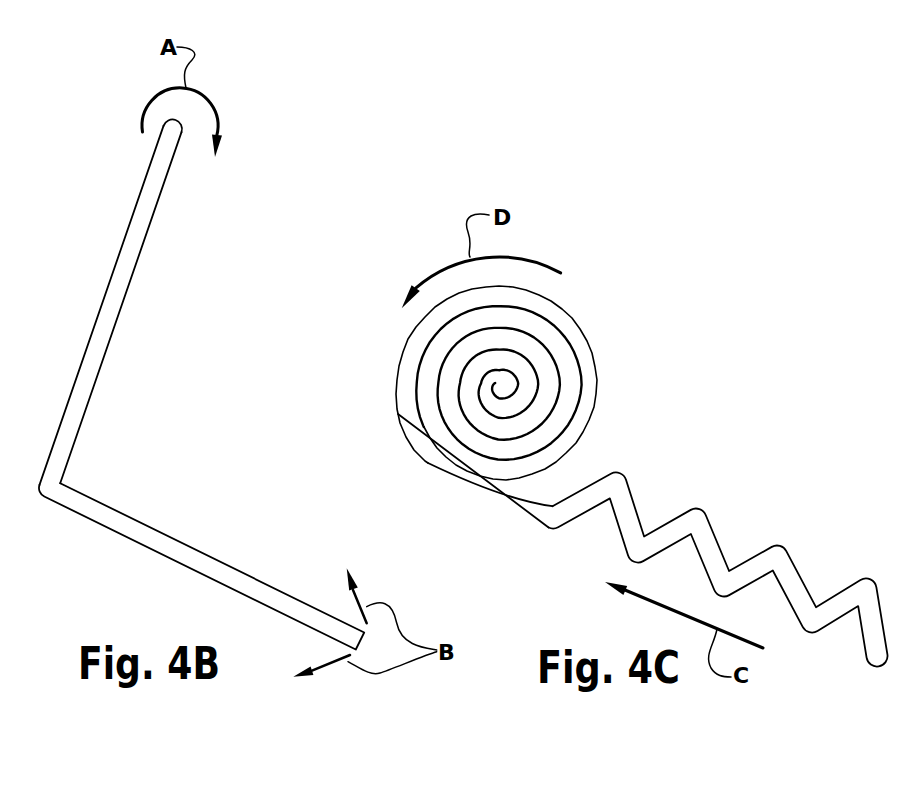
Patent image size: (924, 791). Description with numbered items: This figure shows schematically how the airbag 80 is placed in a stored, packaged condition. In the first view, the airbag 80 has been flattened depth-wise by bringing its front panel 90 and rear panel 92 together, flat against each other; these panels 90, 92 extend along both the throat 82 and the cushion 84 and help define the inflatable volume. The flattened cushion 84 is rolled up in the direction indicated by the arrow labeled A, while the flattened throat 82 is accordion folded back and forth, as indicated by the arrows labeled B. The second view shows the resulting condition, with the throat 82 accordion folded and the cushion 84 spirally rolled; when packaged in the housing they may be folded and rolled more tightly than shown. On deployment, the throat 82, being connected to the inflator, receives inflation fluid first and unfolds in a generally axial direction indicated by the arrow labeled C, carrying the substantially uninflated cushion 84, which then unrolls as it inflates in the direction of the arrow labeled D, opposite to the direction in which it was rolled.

In FIG. 4B, the airbag 80 is at (201, 375).
In FIG. 4C, the airbag 80 is at (605, 434).
In FIG. 4B, the throat 82 is at (198, 551).
In FIG. 4C, the throat 82 is at (778, 551).
In FIG. 4B, the cushion 84 is at (139, 301).
In FIG. 4C, the cushion 84 is at (594, 380).
In FIG. 4B, the front panel 90 is at (132, 216).
In FIG. 4C, the front panel 90 is at (396, 386).
In FIG. 4B, the rear panel 92 is at (152, 217).
In FIG. 4C, the rear panel 92 is at (629, 491).